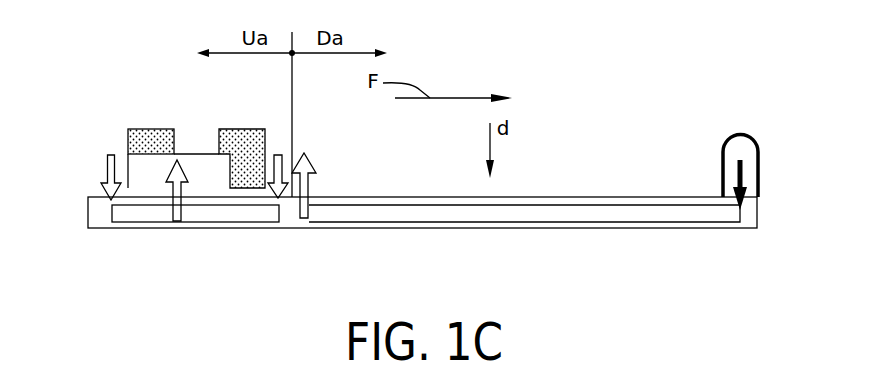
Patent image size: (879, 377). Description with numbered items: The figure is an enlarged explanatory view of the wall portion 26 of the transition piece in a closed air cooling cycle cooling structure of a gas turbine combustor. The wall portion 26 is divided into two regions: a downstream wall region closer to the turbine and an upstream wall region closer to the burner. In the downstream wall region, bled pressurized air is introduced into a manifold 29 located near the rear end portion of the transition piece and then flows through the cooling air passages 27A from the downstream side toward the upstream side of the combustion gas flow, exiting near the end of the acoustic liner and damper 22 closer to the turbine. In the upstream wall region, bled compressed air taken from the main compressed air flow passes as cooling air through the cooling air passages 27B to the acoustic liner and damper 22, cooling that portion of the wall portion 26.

The acoustic liner and damper 22 is at (142, 120).
The wall portion 26 is at (658, 229).
The cooling air passages 27A is at (617, 192).
The cooling air passages 27B is at (127, 233).
The manifold 29 is at (760, 158).